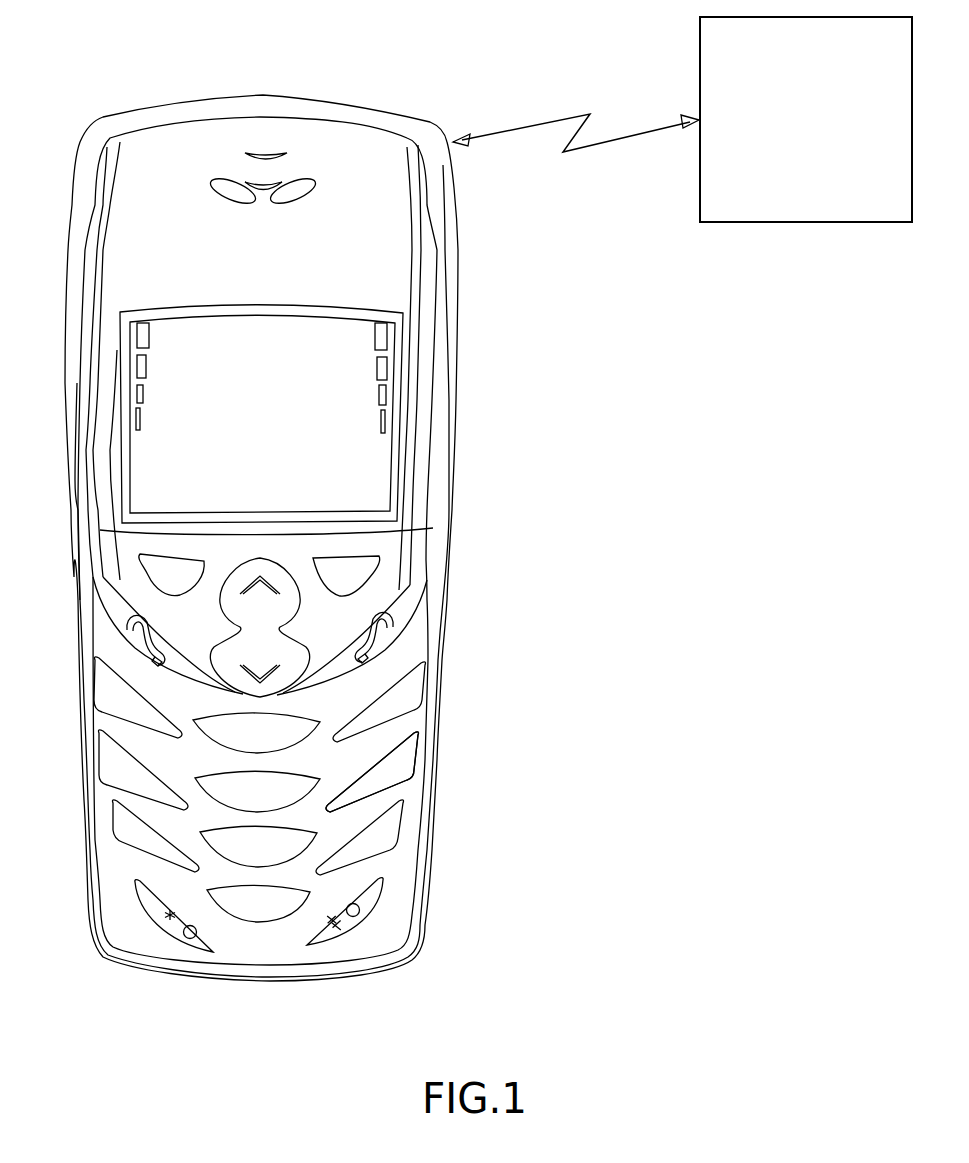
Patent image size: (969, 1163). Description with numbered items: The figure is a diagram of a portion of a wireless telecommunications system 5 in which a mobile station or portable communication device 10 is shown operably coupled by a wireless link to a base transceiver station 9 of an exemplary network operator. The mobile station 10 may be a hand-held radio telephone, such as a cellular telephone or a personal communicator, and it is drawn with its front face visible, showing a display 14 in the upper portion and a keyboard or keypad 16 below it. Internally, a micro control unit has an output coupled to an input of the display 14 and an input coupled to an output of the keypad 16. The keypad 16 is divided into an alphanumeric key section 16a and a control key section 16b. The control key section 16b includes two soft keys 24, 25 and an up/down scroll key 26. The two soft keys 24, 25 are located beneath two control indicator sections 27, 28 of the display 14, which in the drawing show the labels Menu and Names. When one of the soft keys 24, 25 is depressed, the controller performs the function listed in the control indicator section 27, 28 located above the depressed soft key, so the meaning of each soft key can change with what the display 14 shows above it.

The wireless telecommunications system 5 is at (702, 566).
The base transceiver station 9 is at (823, 222).
The mobile station 10 is at (433, 828).
The display 14 is at (388, 386).
The keypad 16 is at (410, 685).
The alphanumeric key section 16a is at (402, 756).
The control key section 16b is at (410, 598).
The soft key 24 is at (376, 547).
The soft key 25 is at (142, 556).
The up/down scroll key 26 is at (220, 640).
The control indicator section 27 is at (380, 492).
The control indicator section 28 is at (140, 484).